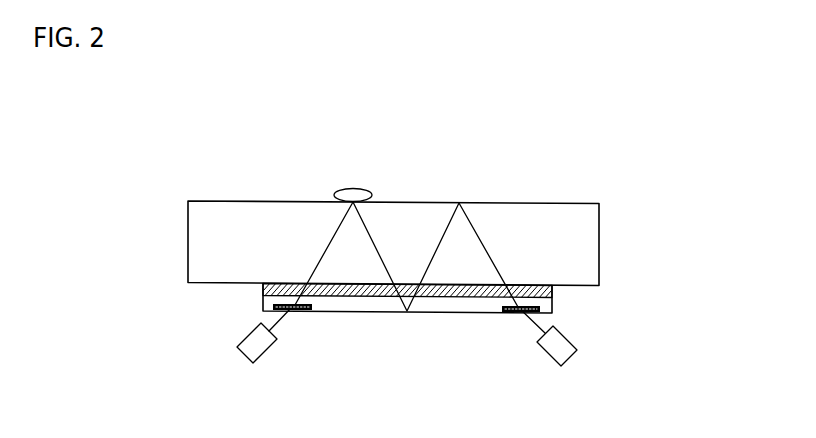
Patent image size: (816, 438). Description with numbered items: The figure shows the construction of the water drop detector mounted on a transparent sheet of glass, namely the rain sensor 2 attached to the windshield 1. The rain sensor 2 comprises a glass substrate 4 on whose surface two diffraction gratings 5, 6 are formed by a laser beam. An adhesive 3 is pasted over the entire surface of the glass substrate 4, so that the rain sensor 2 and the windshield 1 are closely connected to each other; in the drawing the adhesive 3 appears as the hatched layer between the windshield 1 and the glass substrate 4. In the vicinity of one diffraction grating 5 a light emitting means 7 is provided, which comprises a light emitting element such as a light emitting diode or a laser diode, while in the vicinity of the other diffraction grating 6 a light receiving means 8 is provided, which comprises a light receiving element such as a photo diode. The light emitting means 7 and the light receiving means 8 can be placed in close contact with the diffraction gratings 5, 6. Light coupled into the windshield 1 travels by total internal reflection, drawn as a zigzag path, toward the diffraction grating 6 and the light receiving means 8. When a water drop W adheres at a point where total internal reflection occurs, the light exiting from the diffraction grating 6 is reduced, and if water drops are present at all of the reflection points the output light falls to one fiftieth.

The windshield 1 is at (198, 238).
The water drop W is at (355, 189).
The rain sensor 2 is at (379, 341).
The adhesive 3 is at (262, 287).
The glass substrate 4 is at (348, 305).
The diffraction grating 5 is at (513, 313).
The diffraction grating 6 is at (297, 312).
The light emitting means 7 is at (564, 358).
The light receiving means 8 is at (245, 348).